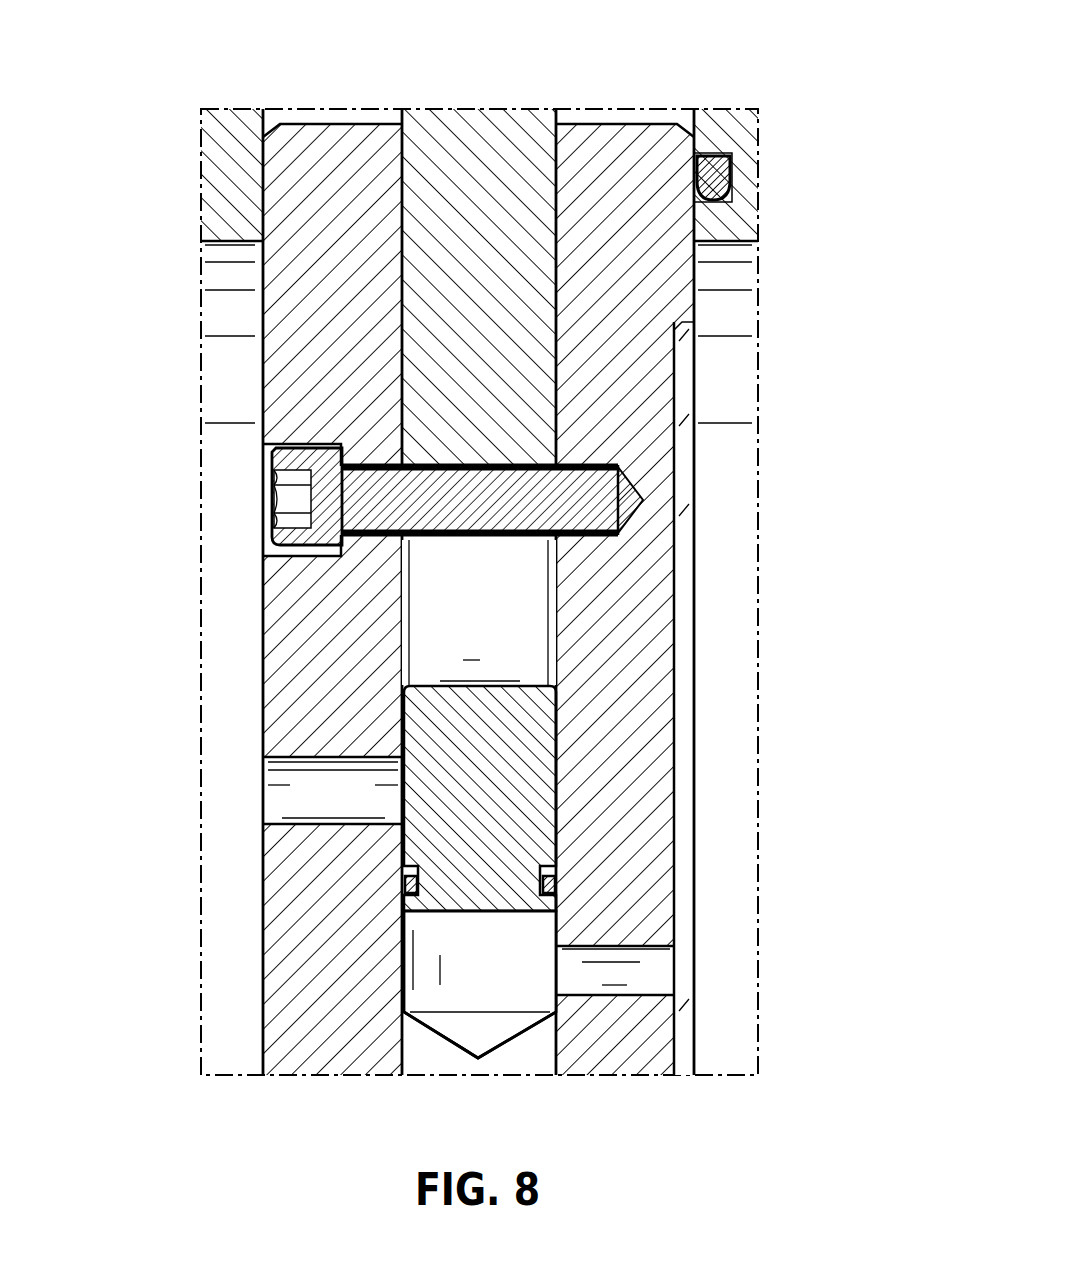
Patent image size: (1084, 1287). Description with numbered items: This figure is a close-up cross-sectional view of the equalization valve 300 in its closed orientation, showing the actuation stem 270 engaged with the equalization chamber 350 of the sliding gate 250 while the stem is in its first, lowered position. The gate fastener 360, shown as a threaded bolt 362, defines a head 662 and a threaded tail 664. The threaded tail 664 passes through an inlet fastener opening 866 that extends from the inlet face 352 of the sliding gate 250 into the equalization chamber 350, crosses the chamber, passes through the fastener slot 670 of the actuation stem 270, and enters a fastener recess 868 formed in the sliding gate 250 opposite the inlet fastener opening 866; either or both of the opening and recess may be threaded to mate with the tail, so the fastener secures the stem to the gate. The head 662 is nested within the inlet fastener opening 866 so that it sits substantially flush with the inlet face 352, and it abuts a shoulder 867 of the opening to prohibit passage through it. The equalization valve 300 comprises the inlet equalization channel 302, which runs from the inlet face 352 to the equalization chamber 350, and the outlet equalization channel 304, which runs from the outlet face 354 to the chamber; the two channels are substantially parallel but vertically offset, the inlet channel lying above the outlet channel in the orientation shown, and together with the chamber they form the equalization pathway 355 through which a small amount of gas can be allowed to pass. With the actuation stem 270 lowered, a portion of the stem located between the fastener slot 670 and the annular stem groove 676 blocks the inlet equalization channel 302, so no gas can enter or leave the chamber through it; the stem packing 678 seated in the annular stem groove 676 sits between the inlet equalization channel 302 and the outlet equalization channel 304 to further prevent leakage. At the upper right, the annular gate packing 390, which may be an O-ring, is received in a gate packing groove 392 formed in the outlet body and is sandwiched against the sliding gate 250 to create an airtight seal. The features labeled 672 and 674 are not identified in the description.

The sliding gate 250 is at (285, 316).
The actuation stem 270 is at (483, 175).
The equalization valve 300 is at (165, 913).
The inlet equalization channel 302 is at (318, 790).
The outlet equalization channel 304 is at (640, 975).
The equalization chamber 350 is at (425, 977).
The inlet face 352 is at (256, 274).
The outlet face 354 is at (690, 750).
The equalization pathway 355 is at (503, 988).
The gate fastener 360 is at (523, 498).
The threaded bolt 362 is at (490, 500).
The gate packing 390 is at (735, 185).
The gate packing groove 392 is at (708, 157).
The head 662 is at (300, 503).
The threaded tail 664 is at (600, 508).
The fastener slot 670 is at (510, 611).
The threaded bore 672 is at (487, 462).
The piston 674 is at (470, 683).
The annular stem groove 676 is at (560, 850).
The stem packing 678 is at (560, 885).
The inlet fastener opening 866 is at (292, 575).
The shoulder 867 is at (343, 443).
The fastener recess 868 is at (560, 456).